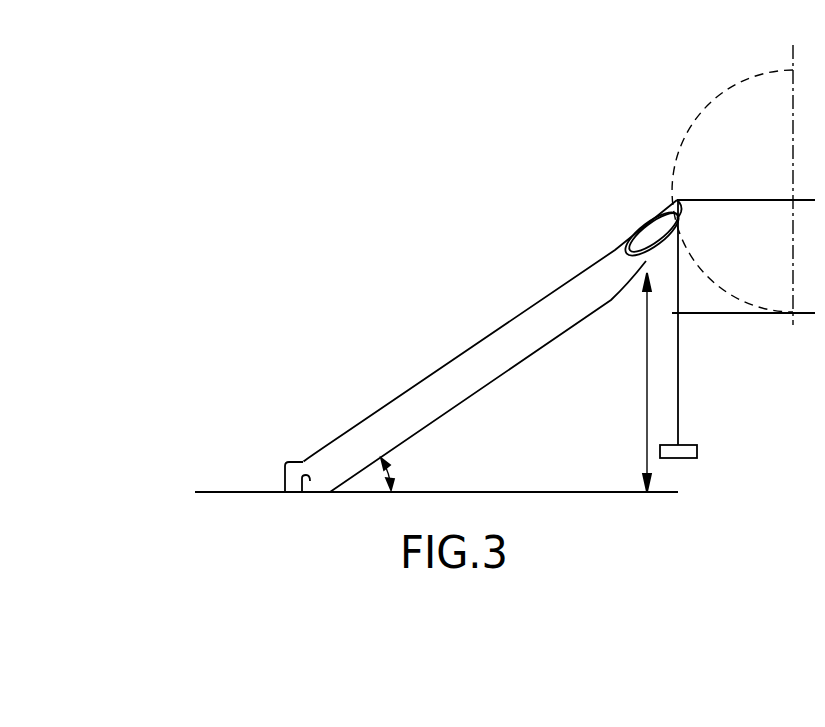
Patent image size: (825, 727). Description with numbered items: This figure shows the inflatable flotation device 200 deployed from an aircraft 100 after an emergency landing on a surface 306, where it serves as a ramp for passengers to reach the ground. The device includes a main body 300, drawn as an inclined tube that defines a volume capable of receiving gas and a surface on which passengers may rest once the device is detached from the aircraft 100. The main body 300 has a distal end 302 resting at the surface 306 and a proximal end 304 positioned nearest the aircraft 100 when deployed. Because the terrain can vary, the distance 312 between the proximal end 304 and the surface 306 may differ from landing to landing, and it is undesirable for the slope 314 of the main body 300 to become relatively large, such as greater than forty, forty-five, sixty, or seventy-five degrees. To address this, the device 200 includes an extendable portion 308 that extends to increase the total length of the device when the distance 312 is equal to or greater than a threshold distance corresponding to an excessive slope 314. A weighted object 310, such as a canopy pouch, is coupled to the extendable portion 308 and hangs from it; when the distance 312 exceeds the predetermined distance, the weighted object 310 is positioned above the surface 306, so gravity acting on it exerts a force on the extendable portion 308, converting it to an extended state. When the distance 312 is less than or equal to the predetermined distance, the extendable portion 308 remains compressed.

The aircraft 100 is at (768, 144).
The inflatable flotation device 200 is at (376, 278).
The main body 300 is at (420, 383).
The distal end 302 is at (285, 467).
The proximal end 304 is at (645, 262).
The surface 306 is at (208, 492).
The extendable portion 308 is at (664, 178).
The weighted object 310 is at (697, 451).
The distance 312 is at (647, 435).
The slope 314 is at (390, 476).